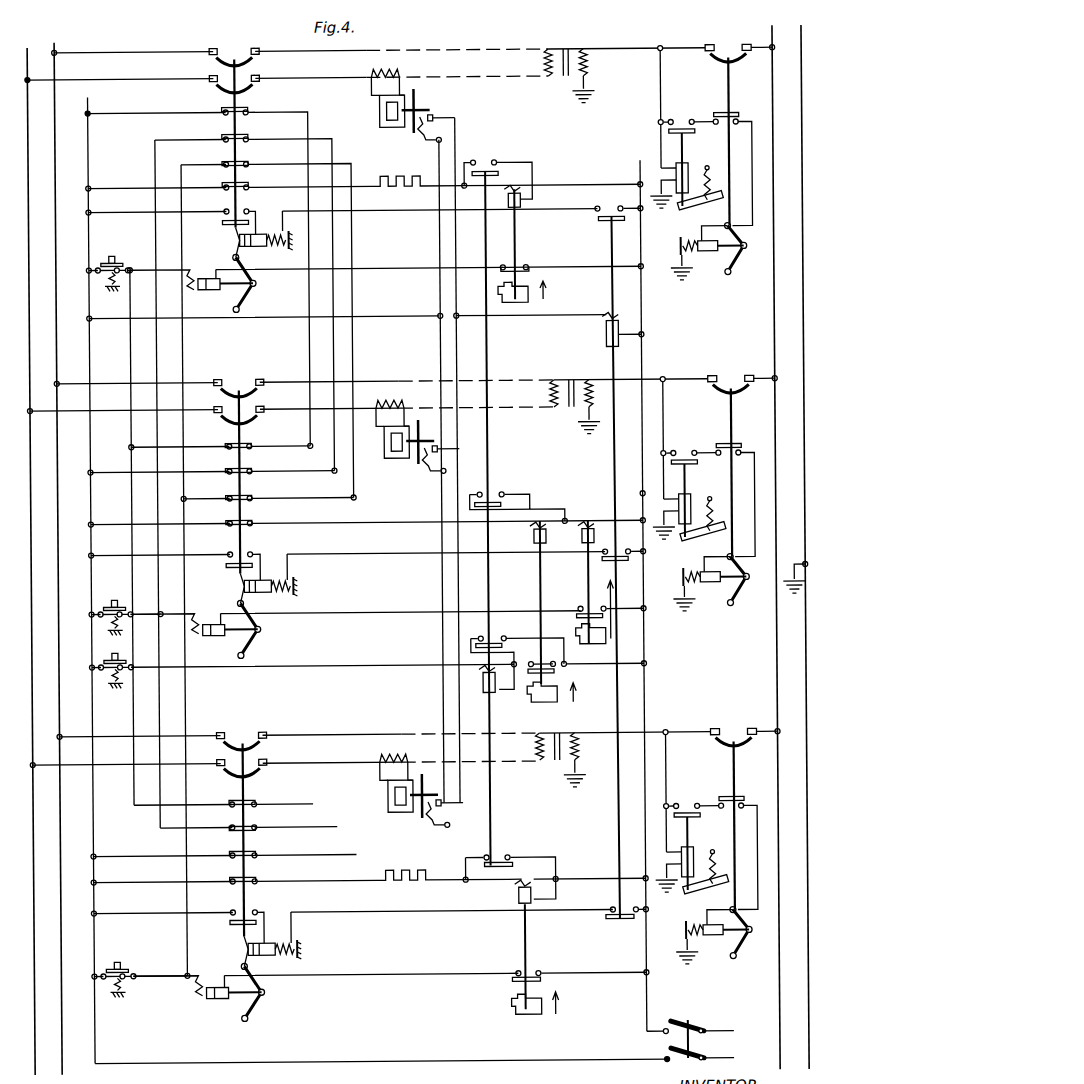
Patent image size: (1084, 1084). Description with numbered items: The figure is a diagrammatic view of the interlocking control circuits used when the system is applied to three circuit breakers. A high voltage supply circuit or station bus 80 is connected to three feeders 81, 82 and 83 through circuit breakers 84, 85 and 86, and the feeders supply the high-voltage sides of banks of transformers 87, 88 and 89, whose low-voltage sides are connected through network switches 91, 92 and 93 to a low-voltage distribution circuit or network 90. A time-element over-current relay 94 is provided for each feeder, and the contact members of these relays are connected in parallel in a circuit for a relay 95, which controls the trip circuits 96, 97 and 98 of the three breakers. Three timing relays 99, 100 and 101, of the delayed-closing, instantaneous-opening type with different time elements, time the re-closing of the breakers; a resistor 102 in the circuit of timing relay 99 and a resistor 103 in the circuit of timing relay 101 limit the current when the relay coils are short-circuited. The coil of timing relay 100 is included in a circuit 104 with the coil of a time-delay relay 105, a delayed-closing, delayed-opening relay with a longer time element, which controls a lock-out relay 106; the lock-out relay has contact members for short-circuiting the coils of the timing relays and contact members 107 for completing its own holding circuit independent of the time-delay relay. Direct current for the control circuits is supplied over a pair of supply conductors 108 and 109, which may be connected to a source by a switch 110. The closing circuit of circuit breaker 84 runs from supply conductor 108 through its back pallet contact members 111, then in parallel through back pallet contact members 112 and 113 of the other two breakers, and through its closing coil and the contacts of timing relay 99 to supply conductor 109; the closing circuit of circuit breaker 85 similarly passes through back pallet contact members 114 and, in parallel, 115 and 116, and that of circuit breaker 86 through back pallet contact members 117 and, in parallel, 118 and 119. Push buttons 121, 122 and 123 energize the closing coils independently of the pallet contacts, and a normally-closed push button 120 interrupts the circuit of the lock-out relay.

The station bus 80 is at (33, 313).
The feeder 81 is at (361, 60).
The feeder 82 is at (283, 393).
The feeder 83 is at (275, 752).
The circuit breaker 84 is at (236, 100).
The circuit breaker 85 is at (240, 436).
The circuit breaker 86 is at (240, 790).
The bank of transformers 87 is at (586, 37).
The bank of transformers 88 is at (568, 369).
The bank of transformers 89 is at (562, 723).
The low-voltage distribution circuit or network 90 is at (805, 652).
The network switch 91 is at (730, 84).
The network switch 92 is at (733, 482).
The network switch 93 is at (732, 774).
The time-element over-current relay 94 is at (400, 126).
The relay 95 is at (612, 340).
The trip circuit 96 is at (420, 216).
The trip circuit 97 is at (422, 558).
The trip circuit 98 is at (443, 918).
The timing relay 99 is at (523, 252).
The timing relay 100 is at (588, 592).
The timing relay 101 is at (530, 960).
The resistor 102 is at (400, 182).
The resistor 103 is at (412, 876).
The circuit 104 is at (403, 523).
The time-delay relay 105 is at (540, 598).
The lock-out relay 106 is at (487, 243).
The contact members 107 is at (505, 637).
The supply conductor 108 is at (91, 163).
The supply conductor 109 is at (643, 164).
The switch 110 is at (688, 1030).
The back pallet contact members 111 is at (232, 113).
The back pallet contact members 112 is at (253, 445).
The back pallet contact members 113 is at (254, 803).
The back pallet contact members 114 is at (253, 470).
The back pallet contact members 115 is at (252, 138).
The back pallet contact members 116 is at (255, 826).
The back pallet contact members 117 is at (255, 854).
The back pallet contact members 118 is at (252, 163).
The back pallet contact members 119 is at (253, 497).
The normally-closed push button 120 is at (100, 662).
The push button 121 is at (128, 260).
The push button 122 is at (115, 597).
The push button 123 is at (128, 968).